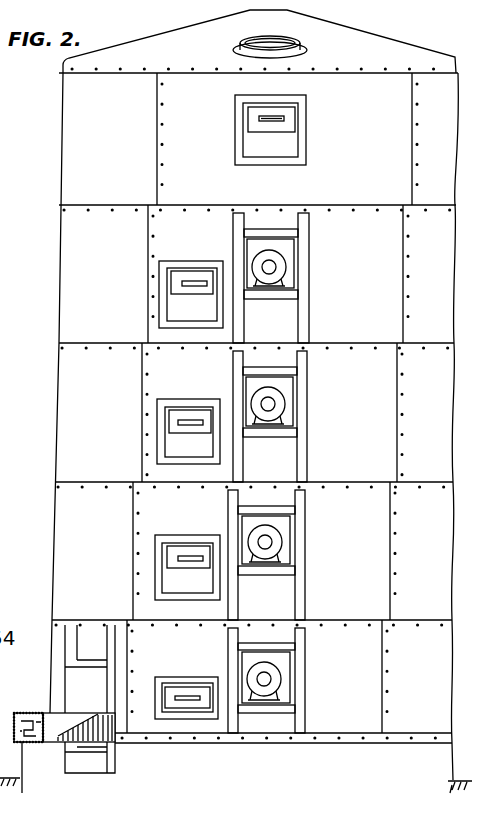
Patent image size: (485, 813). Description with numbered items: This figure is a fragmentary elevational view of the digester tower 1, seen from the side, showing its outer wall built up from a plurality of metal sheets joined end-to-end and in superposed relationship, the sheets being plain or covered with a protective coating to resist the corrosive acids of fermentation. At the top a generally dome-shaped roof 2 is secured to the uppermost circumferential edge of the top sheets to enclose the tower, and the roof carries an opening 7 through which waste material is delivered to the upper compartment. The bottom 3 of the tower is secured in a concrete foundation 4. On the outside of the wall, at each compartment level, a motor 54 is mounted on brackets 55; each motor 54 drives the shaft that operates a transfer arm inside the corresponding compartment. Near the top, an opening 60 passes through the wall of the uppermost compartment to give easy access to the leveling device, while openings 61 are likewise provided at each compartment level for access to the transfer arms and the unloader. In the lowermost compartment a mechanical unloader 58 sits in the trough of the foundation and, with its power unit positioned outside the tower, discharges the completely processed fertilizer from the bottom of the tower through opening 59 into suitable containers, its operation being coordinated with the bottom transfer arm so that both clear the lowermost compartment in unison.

The digester tower 1 is at (60, 304).
The roof 2 is at (399, 43).
The bottom 3 is at (337, 729).
The concrete foundation 4 is at (389, 753).
The opening 7 is at (317, 48).
The motor 54 is at (284, 256).
The brackets 55 is at (300, 277).
The mechanical unloader 58 is at (15, 723).
The opening 59 is at (96, 708).
The opening 60 is at (297, 118).
The openings 61 is at (185, 270).